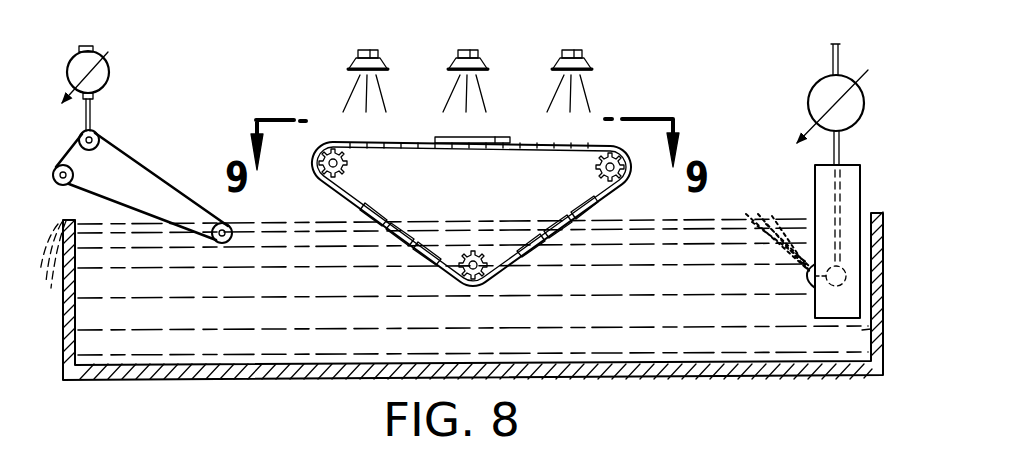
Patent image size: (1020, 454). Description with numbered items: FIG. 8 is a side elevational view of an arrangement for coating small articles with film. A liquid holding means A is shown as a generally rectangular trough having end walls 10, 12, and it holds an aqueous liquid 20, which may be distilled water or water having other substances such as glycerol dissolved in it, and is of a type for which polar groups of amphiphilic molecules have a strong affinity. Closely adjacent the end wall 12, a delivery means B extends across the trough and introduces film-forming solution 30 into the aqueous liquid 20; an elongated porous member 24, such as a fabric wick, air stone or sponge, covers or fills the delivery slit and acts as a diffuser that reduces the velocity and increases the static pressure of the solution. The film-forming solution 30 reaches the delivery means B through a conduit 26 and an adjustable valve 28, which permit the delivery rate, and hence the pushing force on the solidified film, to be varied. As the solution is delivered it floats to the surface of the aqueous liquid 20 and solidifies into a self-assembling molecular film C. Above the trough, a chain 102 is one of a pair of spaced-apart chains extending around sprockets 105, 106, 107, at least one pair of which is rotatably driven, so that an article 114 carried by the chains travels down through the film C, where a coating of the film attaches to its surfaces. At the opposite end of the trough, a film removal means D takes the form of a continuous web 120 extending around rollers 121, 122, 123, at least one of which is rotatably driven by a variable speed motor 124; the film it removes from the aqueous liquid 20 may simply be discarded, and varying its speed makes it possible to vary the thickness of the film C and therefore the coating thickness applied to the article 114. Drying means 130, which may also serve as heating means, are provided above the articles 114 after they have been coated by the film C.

The end wall 10 is at (67, 372).
The end wall 12 is at (862, 330).
The aqueous liquid 20 is at (300, 362).
The elongated porous member 24 is at (812, 277).
The conduit 26 is at (830, 52).
The adjustable valve 28 is at (810, 96).
The film-forming solution 30 is at (777, 247).
The chain 102 is at (385, 143).
The sprocket 105 is at (352, 165).
The sprocket 106 is at (462, 272).
The sprocket 107 is at (596, 168).
The article 114 is at (490, 138).
The continuous web 120 is at (172, 228).
The roller 121 is at (56, 165).
The roller 122 is at (100, 135).
The roller 123 is at (237, 244).
The variable speed motor 124 is at (110, 71).
The drying means 130 is at (356, 55).
The liquid holding means A is at (180, 386).
The delivery means B is at (815, 170).
The self-assembling molecular film C is at (718, 210).
The film removal means D is at (152, 160).